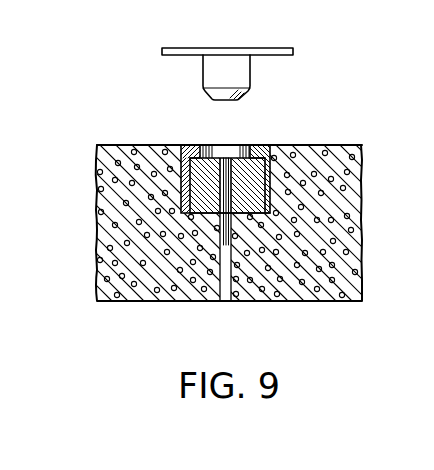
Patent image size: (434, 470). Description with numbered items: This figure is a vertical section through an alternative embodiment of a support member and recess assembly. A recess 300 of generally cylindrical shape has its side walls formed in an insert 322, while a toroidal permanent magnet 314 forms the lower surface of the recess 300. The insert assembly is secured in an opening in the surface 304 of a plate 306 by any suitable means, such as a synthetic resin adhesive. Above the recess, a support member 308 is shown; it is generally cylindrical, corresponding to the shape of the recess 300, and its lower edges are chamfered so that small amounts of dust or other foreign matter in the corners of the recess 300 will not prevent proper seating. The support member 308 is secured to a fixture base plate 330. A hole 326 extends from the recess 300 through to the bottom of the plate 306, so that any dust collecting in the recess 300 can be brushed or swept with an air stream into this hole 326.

The recess 300 is at (224, 144).
The surface 304 is at (325, 145).
The plate 306 is at (98, 203).
The support member 308 is at (250, 70).
The toroidal permanent magnet 314 is at (207, 146).
The insert 322 is at (193, 145).
The hole 326 is at (222, 302).
The fixture base plate 330 is at (232, 48).